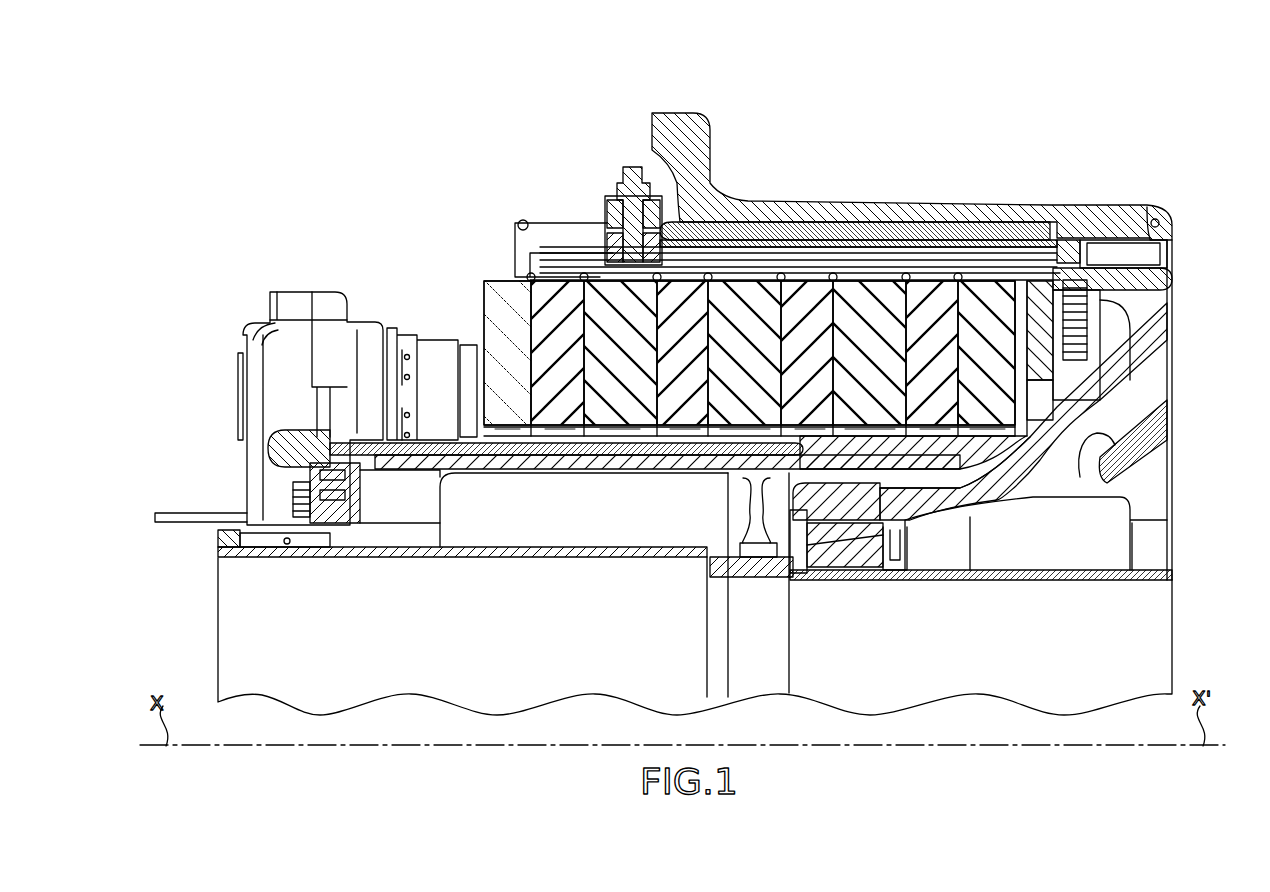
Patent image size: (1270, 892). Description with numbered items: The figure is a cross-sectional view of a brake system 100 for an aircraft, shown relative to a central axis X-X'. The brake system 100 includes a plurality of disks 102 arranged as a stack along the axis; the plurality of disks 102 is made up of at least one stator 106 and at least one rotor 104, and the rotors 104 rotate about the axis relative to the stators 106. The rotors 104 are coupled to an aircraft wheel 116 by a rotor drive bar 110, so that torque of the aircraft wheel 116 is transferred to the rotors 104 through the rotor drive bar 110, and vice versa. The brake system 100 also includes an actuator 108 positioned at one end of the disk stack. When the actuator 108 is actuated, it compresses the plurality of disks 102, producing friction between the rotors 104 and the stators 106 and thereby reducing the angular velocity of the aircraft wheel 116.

The brake system 100 is at (331, 126).
The plurality of disks 102 is at (455, 278).
The rotor 104 is at (560, 403).
The stator 106 is at (613, 410).
The actuator 108 is at (433, 347).
The rotor drive bar 110 is at (823, 247).
The aircraft wheel 116 is at (697, 153).